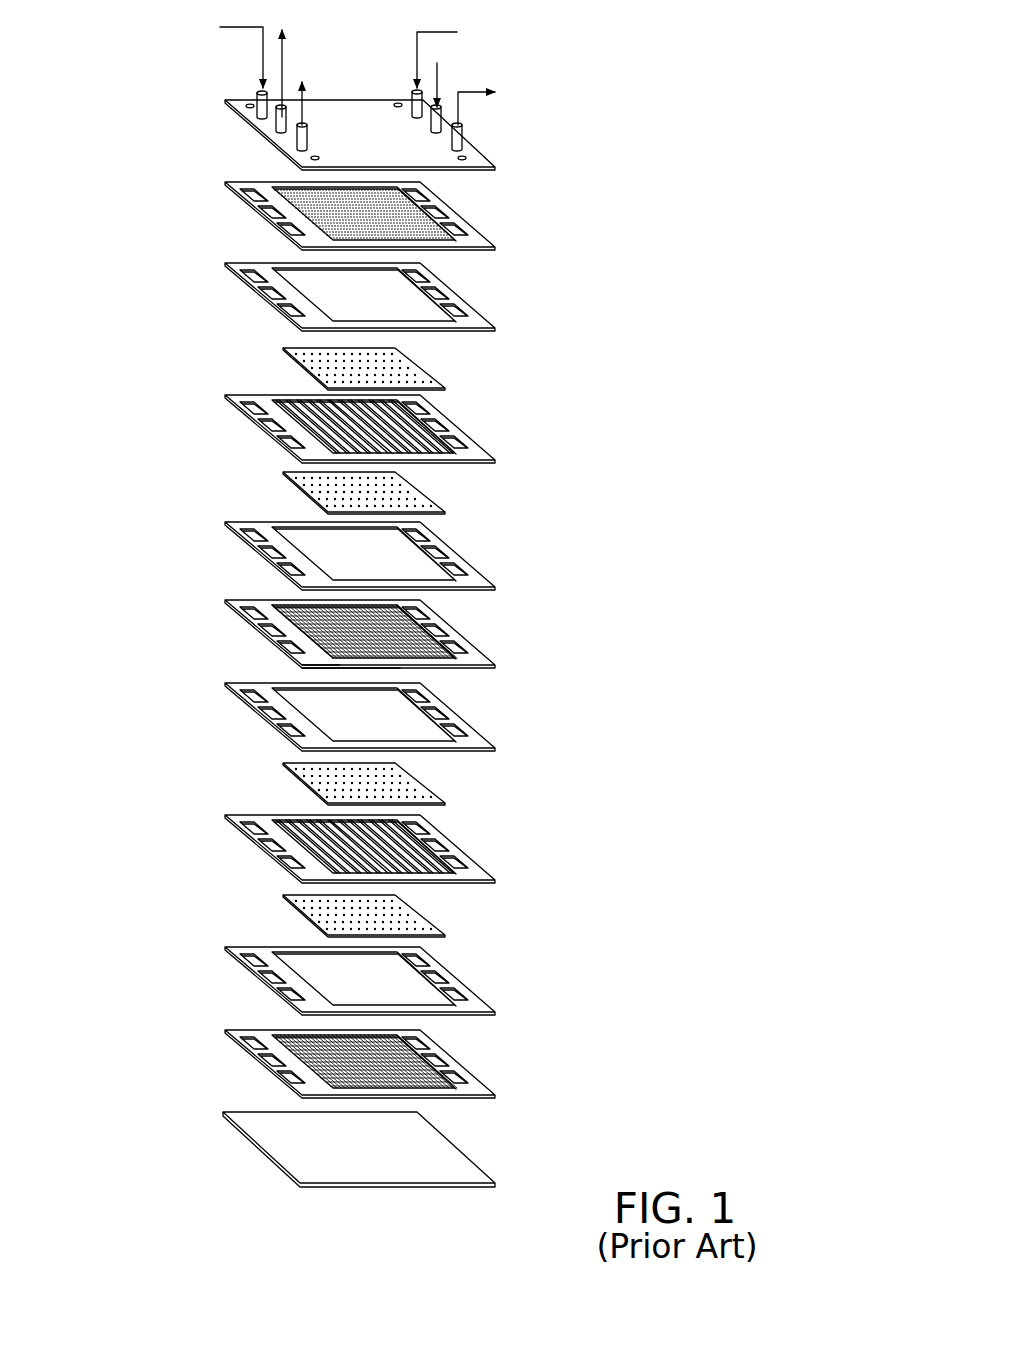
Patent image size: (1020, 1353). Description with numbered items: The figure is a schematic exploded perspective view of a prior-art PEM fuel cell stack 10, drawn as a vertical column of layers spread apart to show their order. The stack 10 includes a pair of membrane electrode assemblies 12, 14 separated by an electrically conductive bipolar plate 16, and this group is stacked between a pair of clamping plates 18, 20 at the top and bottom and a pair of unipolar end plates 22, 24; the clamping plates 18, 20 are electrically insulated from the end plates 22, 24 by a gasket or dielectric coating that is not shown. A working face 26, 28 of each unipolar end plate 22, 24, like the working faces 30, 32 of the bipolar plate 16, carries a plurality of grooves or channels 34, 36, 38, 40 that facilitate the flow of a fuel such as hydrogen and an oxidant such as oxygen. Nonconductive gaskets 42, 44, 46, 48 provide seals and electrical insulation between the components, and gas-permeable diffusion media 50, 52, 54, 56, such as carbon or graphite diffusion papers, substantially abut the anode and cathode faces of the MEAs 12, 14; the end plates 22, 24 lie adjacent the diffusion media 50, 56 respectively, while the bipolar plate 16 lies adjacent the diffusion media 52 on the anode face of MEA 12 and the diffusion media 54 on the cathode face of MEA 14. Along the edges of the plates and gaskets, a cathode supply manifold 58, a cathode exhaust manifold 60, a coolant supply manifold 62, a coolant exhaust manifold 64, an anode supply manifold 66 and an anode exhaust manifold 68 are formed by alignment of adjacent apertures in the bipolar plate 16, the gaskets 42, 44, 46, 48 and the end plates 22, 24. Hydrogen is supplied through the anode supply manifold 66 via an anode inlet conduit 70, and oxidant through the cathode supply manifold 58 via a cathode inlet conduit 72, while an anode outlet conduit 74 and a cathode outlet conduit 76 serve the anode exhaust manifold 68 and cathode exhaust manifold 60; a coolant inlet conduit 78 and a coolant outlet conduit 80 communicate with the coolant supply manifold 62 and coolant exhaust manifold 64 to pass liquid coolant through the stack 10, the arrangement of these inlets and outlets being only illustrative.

The PEM fuel cell stack 10 is at (600, 382).
The membrane electrode assembly 12 is at (253, 432).
The membrane electrode assembly 14 is at (457, 837).
The bipolar plate 16 is at (364, 631).
The clamping plate 18 is at (255, 137).
The clamping plate 20 is at (463, 1153).
The unipolar end plate 22 is at (347, 226).
The unipolar end plate 24 is at (372, 1052).
The working face 26 is at (440, 247).
The working face 28 is at (282, 1035).
The working face 30 is at (400, 632).
The working face 32 is at (340, 672).
The channels 34 is at (263, 222).
The channels 36 is at (435, 612).
The channels 38 is at (287, 657).
The channels 40 is at (427, 1082).
The nonconductive gasket 42 is at (272, 272).
The nonconductive gasket 44 is at (268, 545).
The nonconductive gasket 46 is at (443, 723).
The nonconductive gasket 48 is at (437, 985).
The gas-permeable diffusion media 50 is at (315, 368).
The gas-permeable diffusion media 52 is at (315, 490).
The gas-permeable diffusion media 54 is at (407, 785).
The gas-permeable diffusion media 56 is at (418, 908).
The cathode supply manifold 58 is at (245, 613).
The cathode exhaust manifold 60 is at (453, 652).
The coolant supply manifold 62 is at (443, 628).
The coolant exhaust manifold 64 is at (300, 650).
The anode supply manifold 66 is at (423, 603).
The anode exhaust manifold 68 is at (297, 662).
The anode inlet conduit 70 is at (410, 98).
The cathode inlet conduit 72 is at (258, 98).
The anode outlet conduit 74 is at (297, 138).
The cathode outlet conduit 76 is at (463, 137).
The coolant inlet conduit 78 is at (442, 117).
The coolant outlet conduit 80 is at (278, 125).